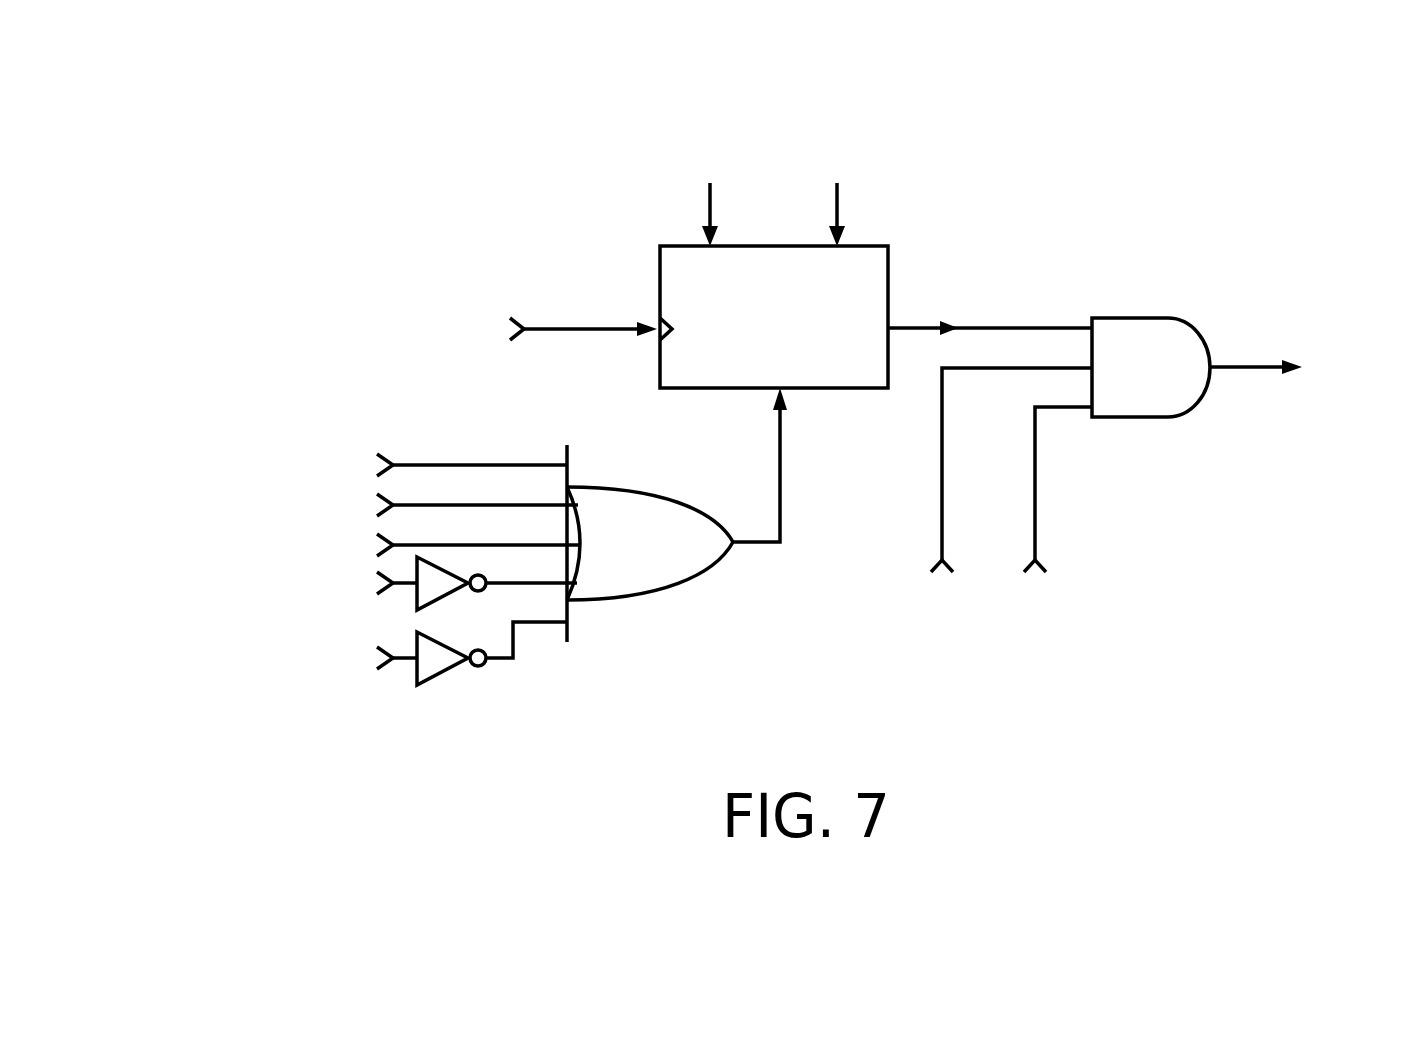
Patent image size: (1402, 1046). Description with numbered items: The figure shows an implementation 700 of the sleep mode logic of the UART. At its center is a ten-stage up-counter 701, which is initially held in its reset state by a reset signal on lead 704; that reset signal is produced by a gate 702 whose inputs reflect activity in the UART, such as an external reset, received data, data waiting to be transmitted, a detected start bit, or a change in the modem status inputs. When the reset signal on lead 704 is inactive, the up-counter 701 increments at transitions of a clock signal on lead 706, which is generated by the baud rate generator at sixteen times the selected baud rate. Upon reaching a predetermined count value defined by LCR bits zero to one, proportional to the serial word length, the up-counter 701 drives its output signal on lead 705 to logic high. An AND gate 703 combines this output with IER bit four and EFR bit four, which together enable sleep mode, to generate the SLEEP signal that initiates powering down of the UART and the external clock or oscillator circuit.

The implementation of the sleep mode logic 700 is at (966, 142).
The up-counter 701 is at (888, 275).
The OR gate 702 is at (695, 583).
The AND gate 703 is at (1145, 318).
The lead carrying the reset signal 704 is at (780, 447).
The lead carrying the output signal 705 is at (1012, 328).
The lead carrying the clock signal 706 is at (568, 332).